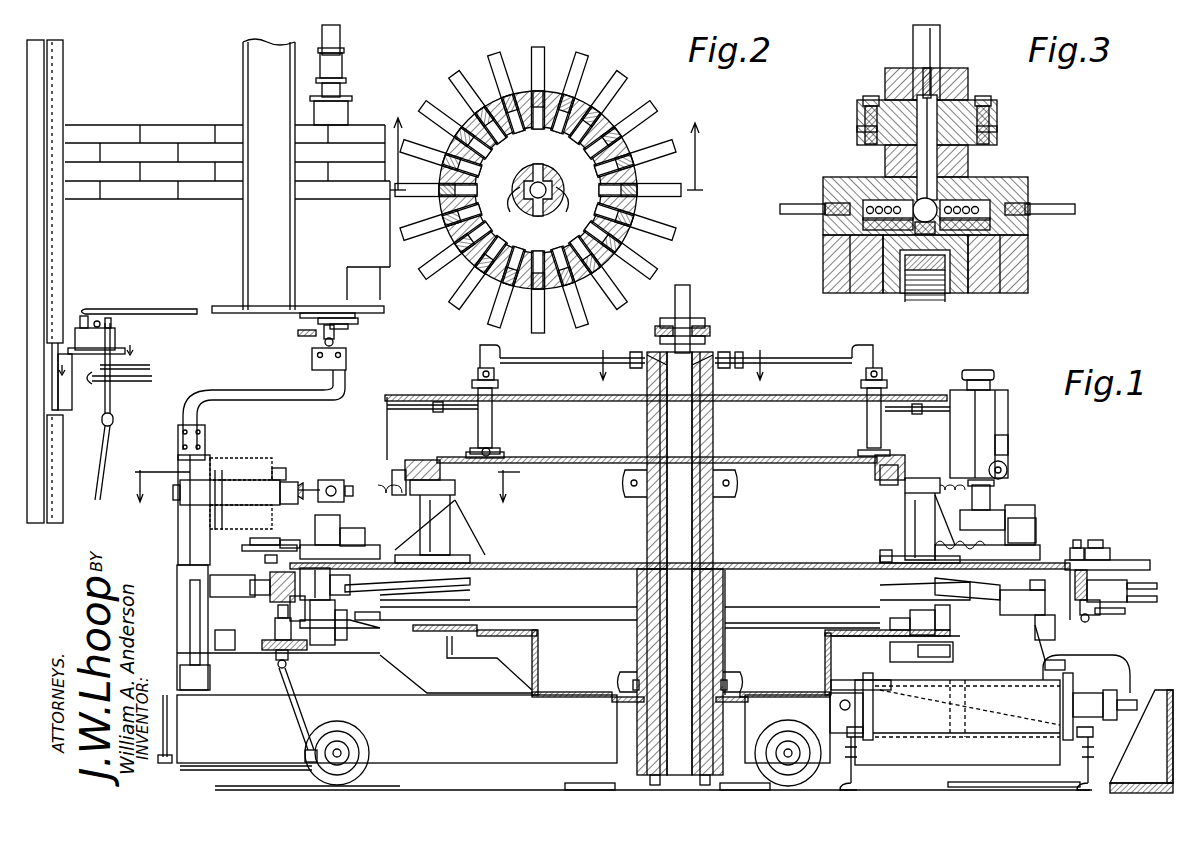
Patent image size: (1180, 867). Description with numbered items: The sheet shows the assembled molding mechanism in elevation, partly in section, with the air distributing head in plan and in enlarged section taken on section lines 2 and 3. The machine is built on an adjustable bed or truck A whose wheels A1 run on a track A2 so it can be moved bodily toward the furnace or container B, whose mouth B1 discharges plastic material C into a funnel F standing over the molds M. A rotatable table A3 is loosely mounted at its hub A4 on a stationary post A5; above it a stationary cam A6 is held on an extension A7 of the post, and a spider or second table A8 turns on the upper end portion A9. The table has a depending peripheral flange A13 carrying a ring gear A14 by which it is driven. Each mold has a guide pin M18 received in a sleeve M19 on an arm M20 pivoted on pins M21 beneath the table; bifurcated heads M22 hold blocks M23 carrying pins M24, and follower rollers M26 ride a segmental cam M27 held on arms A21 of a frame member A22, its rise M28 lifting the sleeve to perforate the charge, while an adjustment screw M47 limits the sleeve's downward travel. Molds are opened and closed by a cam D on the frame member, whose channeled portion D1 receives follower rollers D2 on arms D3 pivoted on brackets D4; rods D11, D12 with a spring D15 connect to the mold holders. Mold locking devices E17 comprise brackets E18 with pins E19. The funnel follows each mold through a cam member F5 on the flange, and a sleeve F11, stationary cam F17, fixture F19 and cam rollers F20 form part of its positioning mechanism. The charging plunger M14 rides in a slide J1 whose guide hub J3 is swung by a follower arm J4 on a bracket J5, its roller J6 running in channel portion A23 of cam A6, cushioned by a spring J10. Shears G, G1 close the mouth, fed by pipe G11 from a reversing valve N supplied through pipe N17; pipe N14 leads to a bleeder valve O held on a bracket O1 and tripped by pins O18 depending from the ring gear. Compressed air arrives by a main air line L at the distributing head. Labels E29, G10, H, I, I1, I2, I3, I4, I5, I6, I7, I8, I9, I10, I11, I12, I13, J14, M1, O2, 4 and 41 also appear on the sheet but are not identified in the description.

In FIG. 1, the adjustable bed or truck A is at (503, 729).
In FIG. 1, the wheels A1 is at (360, 735).
In FIG. 1, the track A2 is at (405, 790).
In FIG. 1, the rotatable table A3 is at (548, 563).
In FIG. 1, the hub A4 is at (730, 605).
In FIG. 1, the post A5 is at (728, 660).
In FIG. 1, the cam A6 is at (848, 457).
In FIG. 1, the extension A7 is at (715, 440).
In FIG. 1, the spider or second table A8 is at (780, 395).
In FIG. 3, the spider or second table A8 is at (828, 268).
In FIG. 1, the upper end portion A9 is at (750, 350).
In FIG. 3, the upper end portion A9 is at (1010, 262).
In FIG. 1, the depending peripheral flange A13 is at (1085, 614).
In FIG. 1, the ring gear A14 is at (1100, 580).
In FIG. 1, the arms A21 is at (985, 640).
In FIG. 1, the frame member A22 is at (820, 672).
In FIG. 1, the channel portion A23 is at (895, 455).
In FIG. 1, the furnace or container B is at (163, 131).
In FIG. 1, the mouth B1 is at (310, 316).
In FIG. 1, the plastic material C is at (337, 342).
In FIG. 1, the cam D is at (888, 622).
In FIG. 1, the continuous channeled portion D1 is at (883, 612).
In FIG. 1, the follower rollers D2 is at (383, 612).
In FIG. 1, the arms D3 is at (470, 608).
In FIG. 1, the brackets D4 is at (463, 530).
In FIG. 1, the rod D11 is at (342, 503).
In FIG. 1, the rod D12 is at (960, 517).
In FIG. 1, the spring D15 is at (377, 506).
In FIG. 1, the mold locking devices E17 is at (1100, 545).
In FIG. 1, the bracket E18 is at (250, 552).
In FIG. 1, the vertically extended pins E19 is at (1077, 545).
In FIG. 1, the gear E29 is at (285, 548).
In FIG. 1, the funnel F is at (328, 436).
In FIG. 1, the member F5 is at (255, 606).
In FIG. 1, the sleeve F11 is at (216, 485).
In FIG. 1, the stationary cam F17 is at (255, 460).
In FIG. 1, the fixture F19 is at (226, 492).
In FIG. 1, the cam rollers F20 is at (286, 470).
In FIG. 1, the shear G is at (297, 333).
In FIG. 1, the shear G1 is at (360, 327).
In FIG. 1, the pipe G10 is at (95, 388).
In FIG. 1, the pipe G11 is at (155, 365).
In FIG. 1, the stem H is at (333, 35).
In FIG. 2, the spray head I is at (550, 190).
In FIG. 3, the spray head I is at (913, 44).
In FIG. 2, the stem I1 is at (530, 175).
In FIG. 3, the stem I1 is at (935, 168).
In FIG. 2, the body I2 is at (552, 172).
In FIG. 3, the body I2 is at (910, 165).
In FIG. 1, the ball valve I3 is at (710, 355).
In FIG. 2, the ball valve I3 is at (640, 172).
In FIG. 3, the ball valve I3 is at (985, 185).
In FIG. 1, the flange I4 is at (690, 330).
In FIG. 3, the flange I4 is at (960, 120).
In FIG. 2, the passage I5 is at (635, 210).
In FIG. 3, the passage I5 is at (980, 217).
In FIG. 2, the passage I6 is at (543, 210).
In FIG. 3, the passage I6 is at (860, 225).
In FIG. 3, the spring I7 is at (995, 205).
In FIG. 1, the rod I8 is at (600, 357).
In FIG. 3, the rod I8 is at (793, 203).
In FIG. 1, the pipe I9 is at (478, 418).
In FIG. 1, the valve I10 is at (502, 453).
In FIG. 1, the valve I11 is at (496, 374).
In FIG. 1, the fitting I12 is at (472, 448).
In FIG. 1, the pipe I13 is at (408, 405).
In FIG. 1, the slide J1 is at (985, 430).
In FIG. 1, the hub J3 is at (395, 470).
In FIG. 1, the follower arm J4 is at (456, 490).
In FIG. 1, the bracket J5 is at (450, 515).
In FIG. 1, the roller J6 is at (418, 460).
In FIG. 1, the compression spring J10 is at (385, 485).
In FIG. 1, the knob J14 is at (1008, 468).
In FIG. 1, the main air line L is at (690, 296).
In FIG. 1, the molds M is at (306, 529).
In FIG. 1, the plate M1 is at (1045, 516).
In FIG. 1, the charging plunger M14 is at (985, 490).
In FIG. 1, the depending guide pin M18 is at (322, 580).
In FIG. 1, the sleeve M19 is at (338, 630).
In FIG. 1, the arm M20 is at (880, 555).
In FIG. 1, the pins M21 is at (905, 590).
In FIG. 1, the bifurcated heads M22 is at (315, 648).
In FIG. 1, the blocks M23 is at (276, 658).
In FIG. 1, the pins M24 is at (275, 690).
In FIG. 1, the follower rollers M26 is at (385, 630).
In FIG. 1, the cam M27 is at (1000, 622).
In FIG. 1, the rise M28 is at (1050, 630).
In FIG. 1, the adjustment screw M47 is at (1100, 652).
In FIG. 1, the reversing valve N is at (92, 335).
In FIG. 1, the pipe N14 is at (113, 396).
In FIG. 1, the pipe N17 is at (88, 312).
In FIG. 1, the bleeder valve O is at (274, 630).
In FIG. 1, the bracket O1 is at (227, 640).
In FIG. 1, the plate O2 is at (265, 650).
In FIG. 1, the pins or extensions O18 is at (1087, 622).
In FIG. 1, the section line 2 is at (685, 372).
In FIG. 2, the section line 3 is at (545, 145).
In FIG. 1, the section line 4 is at (327, 494).
In FIG. 1, the section arrow 41 is at (102, 366).